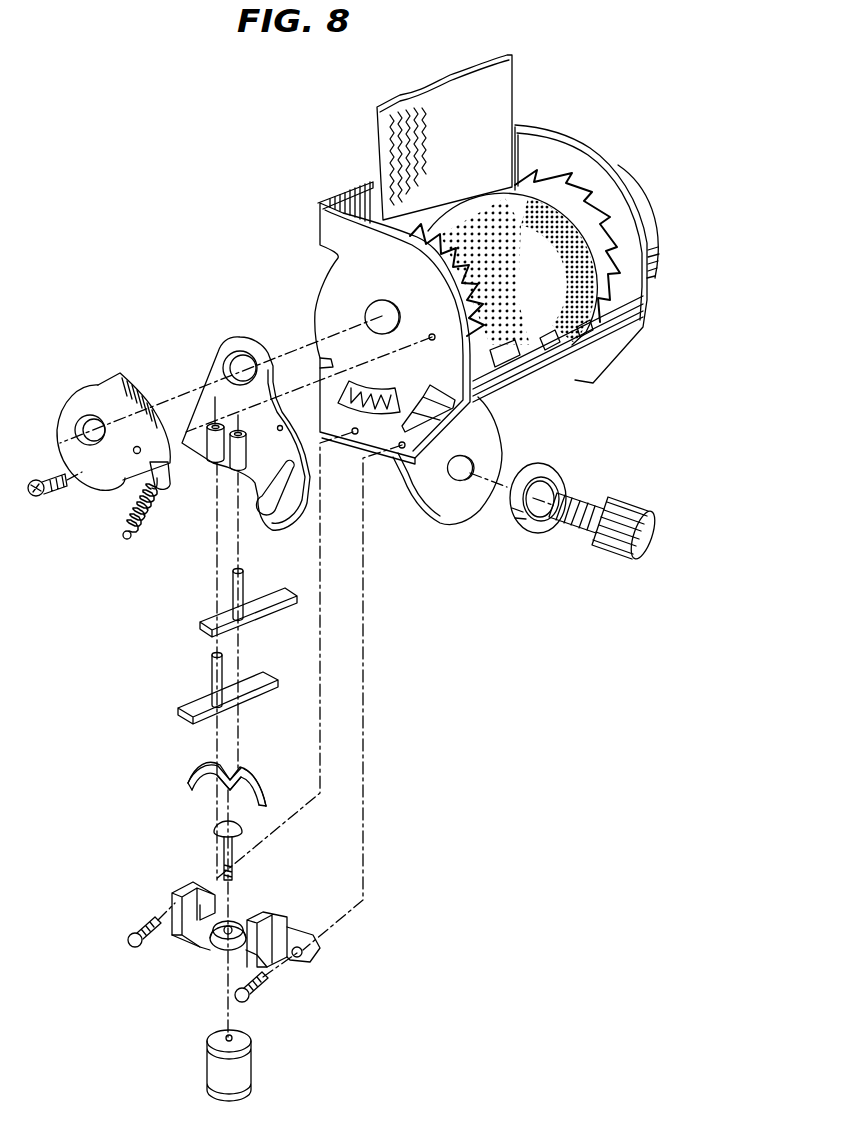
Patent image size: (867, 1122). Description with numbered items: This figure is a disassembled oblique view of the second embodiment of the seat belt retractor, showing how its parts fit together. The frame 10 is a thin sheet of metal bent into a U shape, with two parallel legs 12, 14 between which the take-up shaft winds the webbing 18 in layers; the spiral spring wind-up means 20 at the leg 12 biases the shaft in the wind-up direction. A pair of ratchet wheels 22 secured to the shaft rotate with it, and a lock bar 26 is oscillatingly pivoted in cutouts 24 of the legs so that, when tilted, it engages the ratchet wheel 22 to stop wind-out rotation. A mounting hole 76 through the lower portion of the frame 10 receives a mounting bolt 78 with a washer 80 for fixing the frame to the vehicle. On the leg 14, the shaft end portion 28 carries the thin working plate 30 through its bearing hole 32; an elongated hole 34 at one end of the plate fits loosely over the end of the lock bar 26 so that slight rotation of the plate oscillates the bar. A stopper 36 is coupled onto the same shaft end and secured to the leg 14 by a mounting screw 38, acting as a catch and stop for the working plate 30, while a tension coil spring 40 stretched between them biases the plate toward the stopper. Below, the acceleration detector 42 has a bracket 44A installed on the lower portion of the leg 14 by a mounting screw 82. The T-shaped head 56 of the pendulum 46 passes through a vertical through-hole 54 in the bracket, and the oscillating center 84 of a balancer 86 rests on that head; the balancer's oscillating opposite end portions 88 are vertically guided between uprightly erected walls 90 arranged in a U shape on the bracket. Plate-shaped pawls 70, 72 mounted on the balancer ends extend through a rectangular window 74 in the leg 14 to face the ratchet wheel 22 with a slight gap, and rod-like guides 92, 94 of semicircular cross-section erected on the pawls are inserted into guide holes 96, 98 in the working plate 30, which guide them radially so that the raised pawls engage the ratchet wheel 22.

The frame 10 is at (355, 190).
The leg 12 is at (547, 133).
The leg 14 is at (318, 286).
The webbing 18 is at (500, 90).
The spiral spring wind-up means 20 is at (635, 188).
The ratchet wheel 22 is at (460, 268).
The cutout 24 is at (433, 388).
The lock bar 26 is at (530, 378).
The shaft end portion 28 is at (378, 312).
The working plate 30 is at (258, 392).
The bearing hole 32 is at (240, 357).
The elongated hole 34 is at (278, 513).
The stopper 36 is at (127, 386).
The mounting screw 38 is at (53, 477).
The tension coil spring 40 is at (153, 515).
The acceleration detector 42 is at (241, 912).
The bracket 44A is at (188, 928).
The pendulum 46 is at (210, 1060).
The through-hole 54 is at (230, 926).
The head 56 is at (217, 835).
The pawl 70 is at (257, 673).
The pawl 72 is at (277, 597).
The rectangular window 74 is at (370, 390).
The mounting hole 76 is at (462, 485).
The mounting bolt 78 is at (633, 510).
The washer 80 is at (562, 470).
The mounting screw 82 is at (142, 918).
The oscillating center 84 is at (227, 790).
The balancer 86 is at (252, 770).
The oscillating opposite end portions 88 is at (190, 775).
The uprightly erected walls 90 is at (190, 883).
The guide 92 is at (212, 677).
The guide 94 is at (242, 582).
The guide hole 96 is at (212, 422).
The guide hole 98 is at (277, 421).